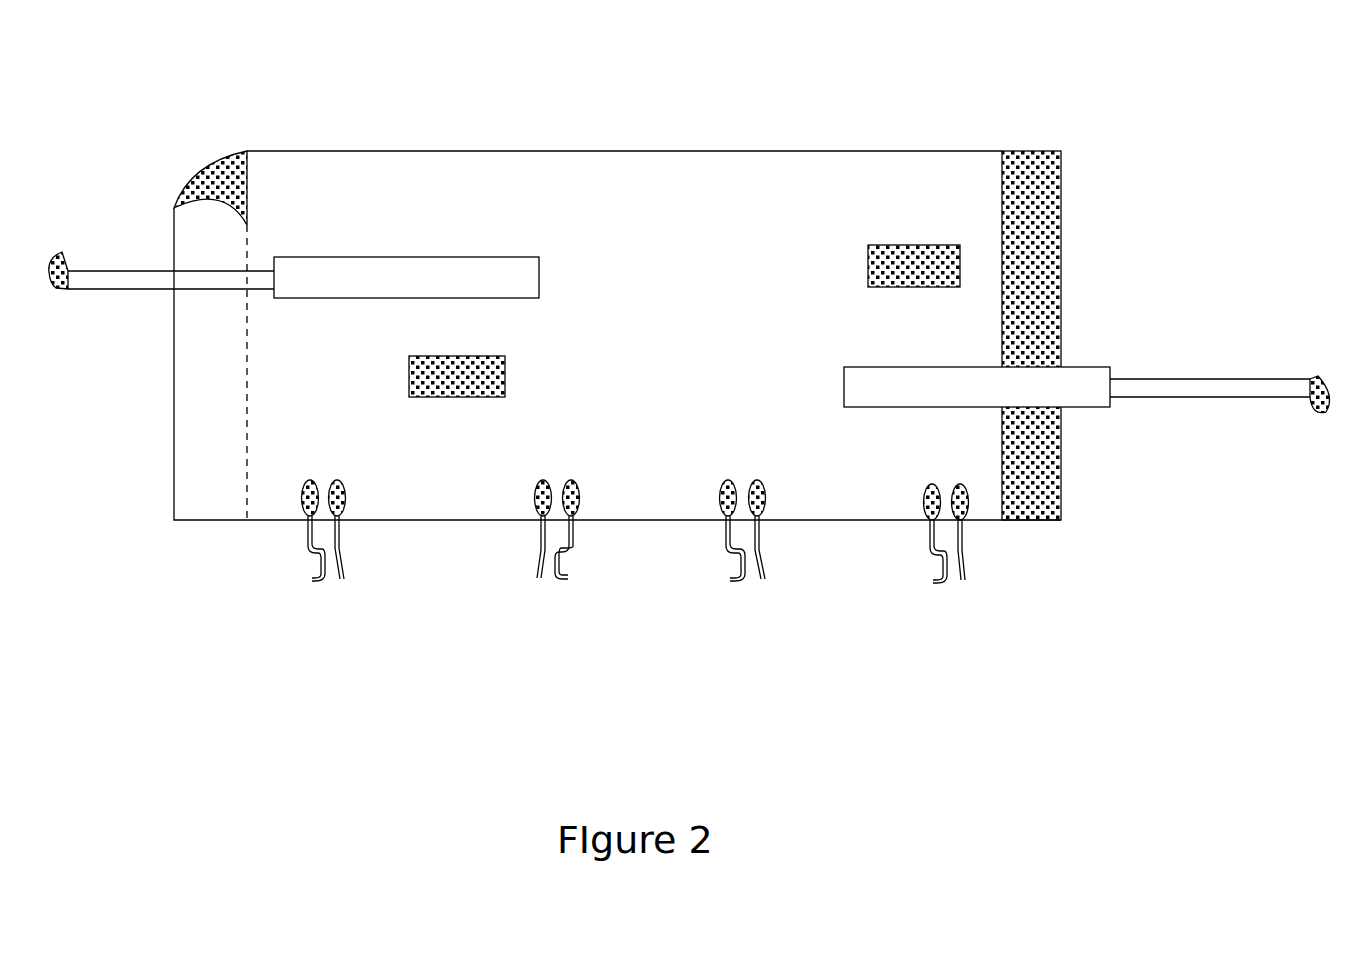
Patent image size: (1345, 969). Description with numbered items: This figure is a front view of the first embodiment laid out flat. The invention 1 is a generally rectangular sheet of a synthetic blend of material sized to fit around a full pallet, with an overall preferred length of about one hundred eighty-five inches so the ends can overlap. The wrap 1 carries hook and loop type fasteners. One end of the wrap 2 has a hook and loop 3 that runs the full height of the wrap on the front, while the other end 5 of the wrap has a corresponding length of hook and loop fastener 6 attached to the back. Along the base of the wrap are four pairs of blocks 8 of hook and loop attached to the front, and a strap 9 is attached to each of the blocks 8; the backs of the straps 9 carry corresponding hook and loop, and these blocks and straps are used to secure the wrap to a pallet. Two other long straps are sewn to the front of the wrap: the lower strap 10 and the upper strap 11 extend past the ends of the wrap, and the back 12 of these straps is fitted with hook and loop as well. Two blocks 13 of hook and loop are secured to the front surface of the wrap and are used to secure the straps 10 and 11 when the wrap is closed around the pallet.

The wrap 1 is at (664, 186).
The end of the wrap 2 is at (1064, 172).
The hook and loop 3 is at (1046, 262).
The other end of the wrap 5 is at (170, 396).
The hook and loop fastener 6 is at (207, 163).
The blocks of hook and loop 8 is at (335, 480).
The strap 9 is at (341, 582).
The lower strap 10 is at (845, 370).
The upper strap 11 is at (500, 257).
The back of the straps 12 is at (59, 252).
The blocks of hook and loop 13 is at (505, 363).